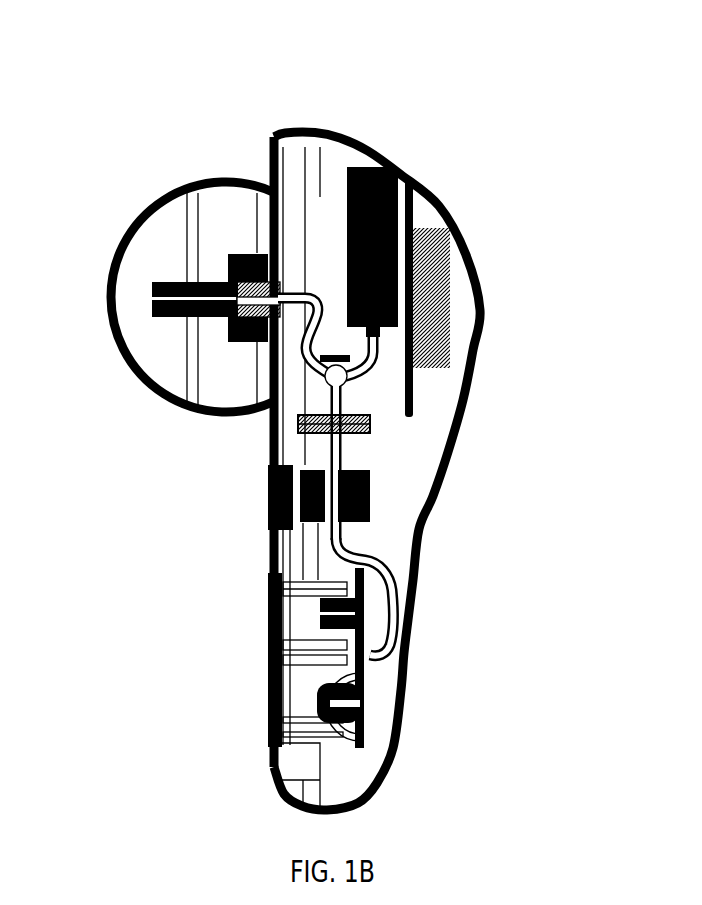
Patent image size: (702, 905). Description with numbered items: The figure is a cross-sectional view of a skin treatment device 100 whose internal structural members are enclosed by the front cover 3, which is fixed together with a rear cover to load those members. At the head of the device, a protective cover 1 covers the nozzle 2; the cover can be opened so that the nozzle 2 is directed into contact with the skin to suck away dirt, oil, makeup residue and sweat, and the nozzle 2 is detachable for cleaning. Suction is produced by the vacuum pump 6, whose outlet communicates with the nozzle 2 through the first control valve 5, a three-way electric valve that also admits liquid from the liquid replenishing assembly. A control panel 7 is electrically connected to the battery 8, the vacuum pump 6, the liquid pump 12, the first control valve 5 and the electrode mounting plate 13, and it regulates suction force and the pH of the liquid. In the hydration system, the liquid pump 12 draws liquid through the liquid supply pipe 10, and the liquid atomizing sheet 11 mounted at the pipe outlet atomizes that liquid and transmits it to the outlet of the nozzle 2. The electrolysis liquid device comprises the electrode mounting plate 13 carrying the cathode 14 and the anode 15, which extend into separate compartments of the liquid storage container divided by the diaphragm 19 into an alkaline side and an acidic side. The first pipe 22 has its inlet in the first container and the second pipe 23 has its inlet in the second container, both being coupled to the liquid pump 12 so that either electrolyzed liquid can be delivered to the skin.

The skin treatment device 100 is at (553, 105).
The protective cover 1 is at (110, 278).
The nozzle 2 is at (153, 311).
The front cover 3 is at (233, 180).
The first control valve 5 is at (377, 365).
The vacuum pump 6 is at (413, 222).
The control panel 7 is at (414, 275).
The battery 8 is at (414, 322).
The liquid supply pipe 10 is at (380, 557).
The liquid atomizing sheet 11 is at (370, 415).
The liquid pump 12 is at (372, 497).
The electrode mounting plate 13 is at (372, 612).
The cathode 14 is at (322, 618).
The anode 15 is at (267, 683).
The diaphragm 19 is at (267, 573).
The first pipe 22 is at (267, 633).
The second pipe 23 is at (267, 713).